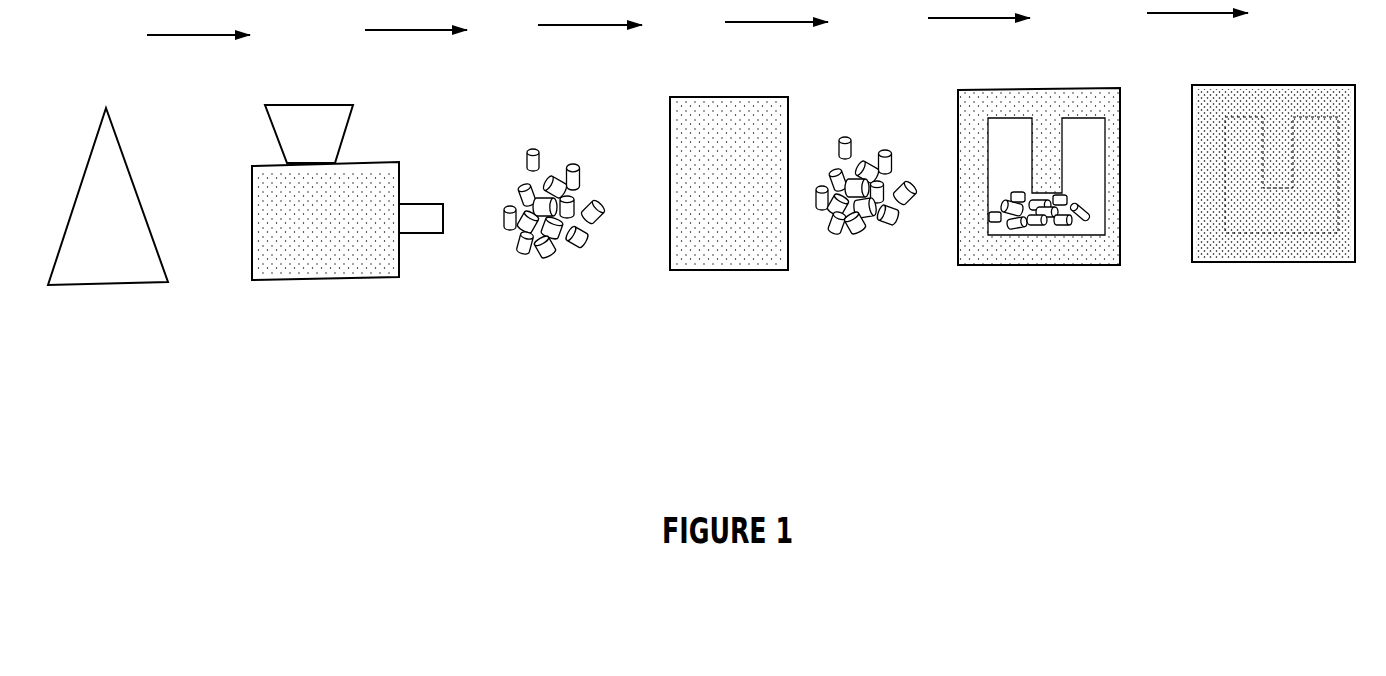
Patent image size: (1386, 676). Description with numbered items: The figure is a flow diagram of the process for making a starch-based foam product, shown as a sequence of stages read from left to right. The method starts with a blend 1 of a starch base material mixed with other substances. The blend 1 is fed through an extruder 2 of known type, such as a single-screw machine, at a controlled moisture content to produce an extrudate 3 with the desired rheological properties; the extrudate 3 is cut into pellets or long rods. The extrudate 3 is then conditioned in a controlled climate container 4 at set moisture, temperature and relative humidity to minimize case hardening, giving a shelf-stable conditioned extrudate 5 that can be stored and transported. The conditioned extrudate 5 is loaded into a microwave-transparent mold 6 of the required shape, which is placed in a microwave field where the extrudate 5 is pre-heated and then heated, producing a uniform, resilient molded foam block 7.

The blend 1 is at (108, 158).
The extruder 2 is at (347, 154).
The extrudate 3 is at (550, 140).
The controlled climate container 4 is at (729, 144).
The conditioned extrudate 5 is at (867, 125).
The mold 6 is at (1039, 137).
The molded foam block 7 is at (1273, 133).